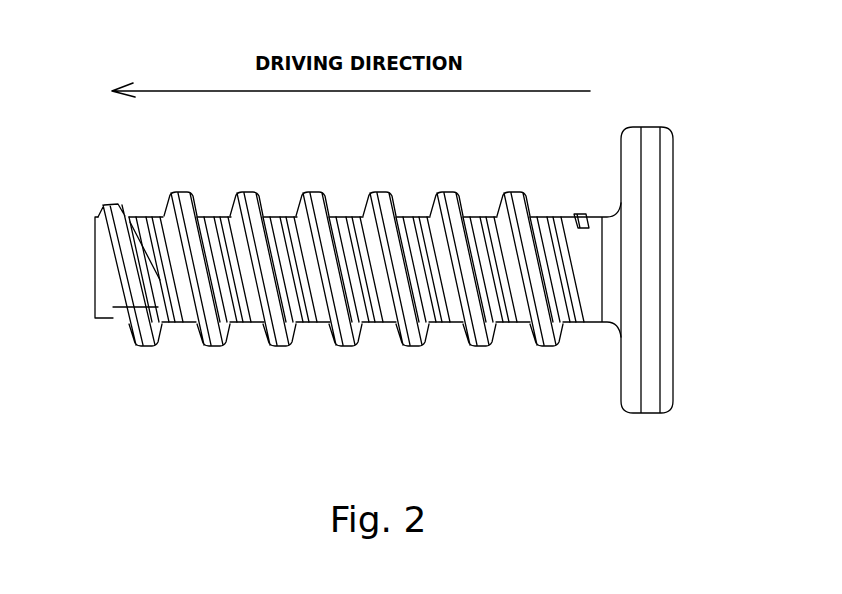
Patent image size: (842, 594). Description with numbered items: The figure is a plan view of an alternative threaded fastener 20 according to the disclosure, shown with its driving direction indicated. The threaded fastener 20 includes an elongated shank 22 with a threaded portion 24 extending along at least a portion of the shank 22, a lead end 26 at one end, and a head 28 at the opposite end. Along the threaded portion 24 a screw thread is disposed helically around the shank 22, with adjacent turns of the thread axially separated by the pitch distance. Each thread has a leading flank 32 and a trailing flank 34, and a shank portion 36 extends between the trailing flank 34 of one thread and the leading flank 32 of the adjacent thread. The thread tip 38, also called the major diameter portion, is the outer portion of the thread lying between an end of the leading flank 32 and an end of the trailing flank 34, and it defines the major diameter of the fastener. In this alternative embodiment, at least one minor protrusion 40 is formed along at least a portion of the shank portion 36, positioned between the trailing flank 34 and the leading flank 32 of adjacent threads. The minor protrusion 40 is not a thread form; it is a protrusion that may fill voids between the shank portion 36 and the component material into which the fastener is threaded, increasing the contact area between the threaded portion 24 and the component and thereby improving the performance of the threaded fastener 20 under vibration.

The threaded fastener 20 is at (656, 110).
The elongated shank 22 is at (594, 327).
The threaded portion 24 is at (460, 370).
The lead end 26 is at (96, 262).
The head 28 is at (676, 322).
The leading flank 32 is at (377, 208).
The trailing flank 34 is at (353, 333).
The shank portion 36 is at (233, 328).
The thread tip 38 is at (212, 345).
The minor protrusion 40 is at (305, 333).